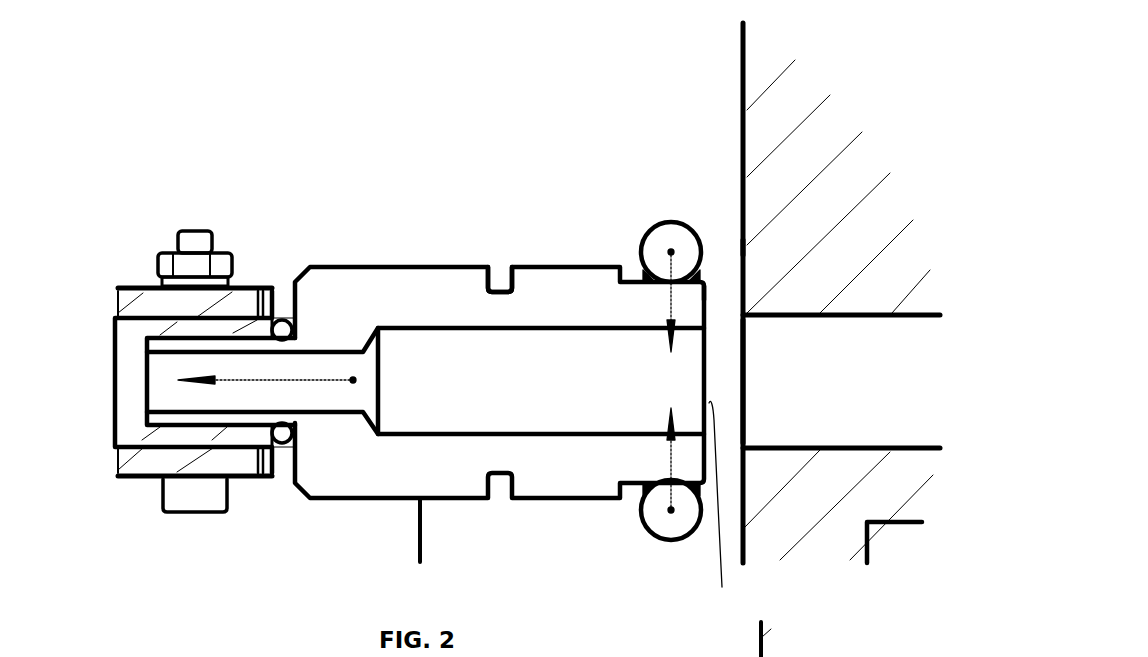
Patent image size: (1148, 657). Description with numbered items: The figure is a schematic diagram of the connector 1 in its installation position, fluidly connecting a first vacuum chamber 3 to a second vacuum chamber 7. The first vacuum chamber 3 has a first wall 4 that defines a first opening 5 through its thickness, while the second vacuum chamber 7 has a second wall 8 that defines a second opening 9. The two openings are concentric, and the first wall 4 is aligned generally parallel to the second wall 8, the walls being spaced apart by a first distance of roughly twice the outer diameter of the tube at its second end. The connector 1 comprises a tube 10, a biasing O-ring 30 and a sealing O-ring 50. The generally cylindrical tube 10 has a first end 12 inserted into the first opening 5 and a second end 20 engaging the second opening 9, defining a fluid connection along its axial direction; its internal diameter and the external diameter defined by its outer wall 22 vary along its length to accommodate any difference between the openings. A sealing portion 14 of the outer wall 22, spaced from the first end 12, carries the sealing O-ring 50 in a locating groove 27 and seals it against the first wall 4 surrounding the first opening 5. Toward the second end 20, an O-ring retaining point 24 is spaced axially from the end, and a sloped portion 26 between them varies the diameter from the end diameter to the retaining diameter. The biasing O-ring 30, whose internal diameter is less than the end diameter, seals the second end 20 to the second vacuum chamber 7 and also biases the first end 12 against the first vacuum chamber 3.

The connector 1 is at (390, 190).
The first vacuum chamber 3 is at (130, 276).
The first wall 4 is at (275, 283).
The first opening 5 is at (130, 400).
The second vacuum chamber 7 is at (758, 138).
The second wall 8 is at (738, 90).
The second opening 9 is at (743, 405).
The tube 10 is at (377, 255).
The first end 12 is at (147, 372).
The sealing portion 14 is at (294, 320).
The second end 20 is at (722, 510).
The outer wall 22 is at (552, 502).
The O-ring retaining point 24 is at (745, 247).
The sloped portion 26 is at (705, 270).
The locating groove 27 is at (503, 275).
The biasing O-ring 30 is at (648, 230).
The sealing O-ring 50 is at (283, 317).